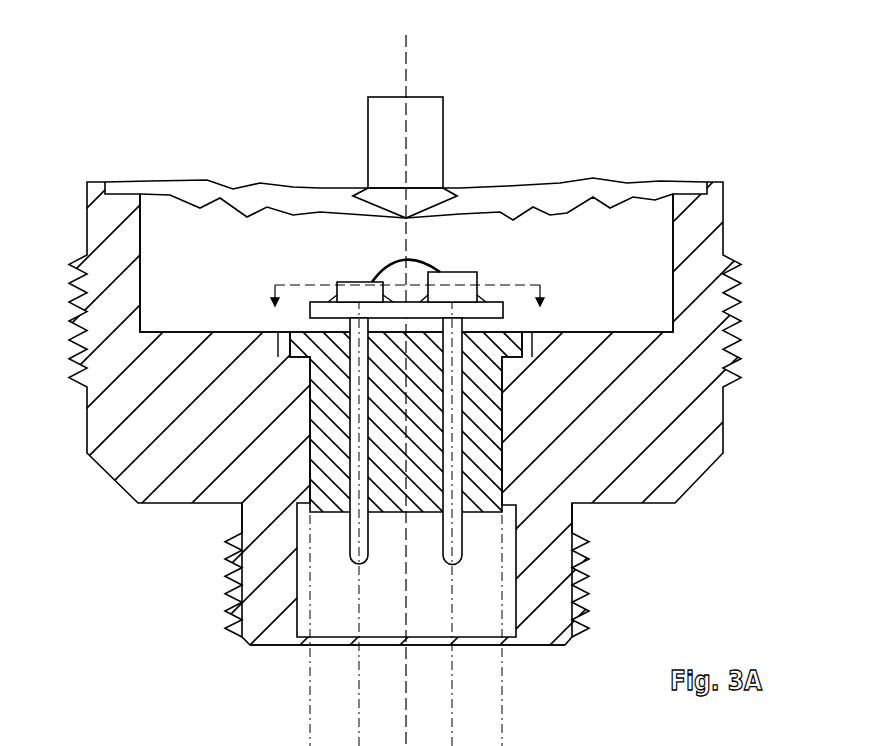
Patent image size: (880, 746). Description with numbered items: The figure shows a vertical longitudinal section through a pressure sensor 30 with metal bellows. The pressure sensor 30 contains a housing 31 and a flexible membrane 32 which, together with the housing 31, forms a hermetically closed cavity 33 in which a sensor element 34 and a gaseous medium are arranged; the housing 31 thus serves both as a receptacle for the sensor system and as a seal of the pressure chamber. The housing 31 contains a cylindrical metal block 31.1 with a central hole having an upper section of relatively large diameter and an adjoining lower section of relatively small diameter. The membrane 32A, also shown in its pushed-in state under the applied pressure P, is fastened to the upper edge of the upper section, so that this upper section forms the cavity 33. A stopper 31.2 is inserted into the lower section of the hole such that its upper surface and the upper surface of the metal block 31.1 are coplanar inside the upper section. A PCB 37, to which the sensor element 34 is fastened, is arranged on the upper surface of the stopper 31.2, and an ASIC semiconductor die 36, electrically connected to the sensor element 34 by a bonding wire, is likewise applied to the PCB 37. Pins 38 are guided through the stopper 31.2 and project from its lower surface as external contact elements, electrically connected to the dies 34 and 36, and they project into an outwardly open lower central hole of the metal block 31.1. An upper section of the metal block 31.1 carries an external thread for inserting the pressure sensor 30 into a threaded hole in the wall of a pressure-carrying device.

The pressure sensor 30 is at (633, 54).
The housing 31 is at (440, 385).
The cylindrical metal block 31.1 is at (713, 207).
The stopper 31.2 is at (570, 510).
The flexible membrane 32 is at (406, 165).
The membrane in the pushed-in state 32A is at (500, 208).
The cavity 33 is at (162, 263).
The sensor element 34 is at (397, 275).
The ASIC semiconductor die 36 is at (350, 292).
The PCB 37 is at (325, 312).
The pins 38 is at (455, 525).
The pressure / plunger P is at (428, 106).